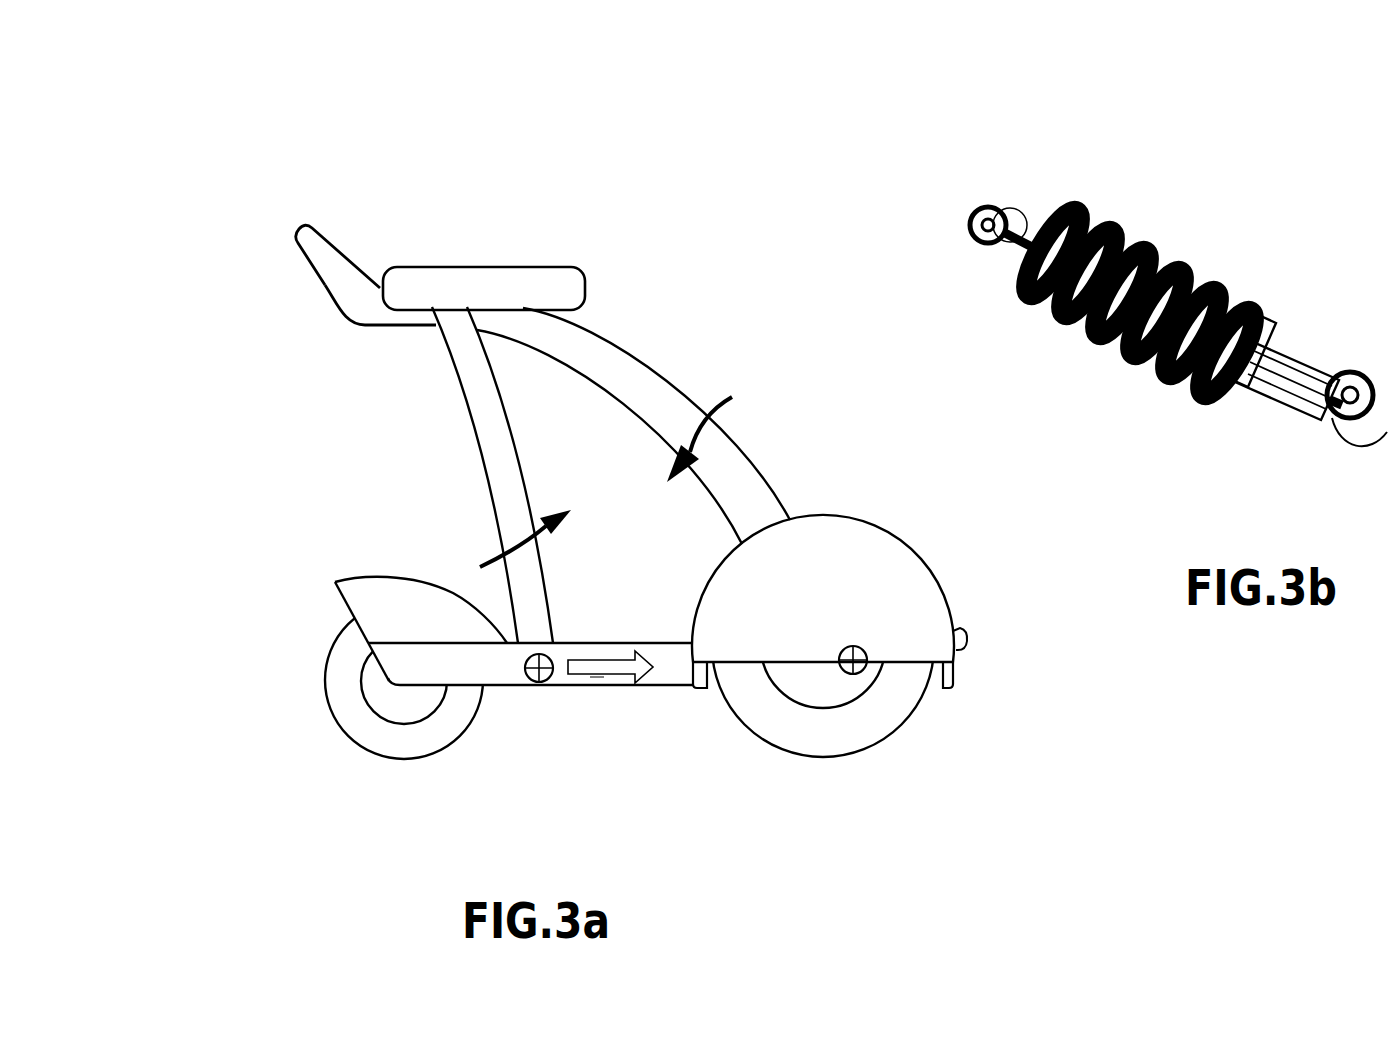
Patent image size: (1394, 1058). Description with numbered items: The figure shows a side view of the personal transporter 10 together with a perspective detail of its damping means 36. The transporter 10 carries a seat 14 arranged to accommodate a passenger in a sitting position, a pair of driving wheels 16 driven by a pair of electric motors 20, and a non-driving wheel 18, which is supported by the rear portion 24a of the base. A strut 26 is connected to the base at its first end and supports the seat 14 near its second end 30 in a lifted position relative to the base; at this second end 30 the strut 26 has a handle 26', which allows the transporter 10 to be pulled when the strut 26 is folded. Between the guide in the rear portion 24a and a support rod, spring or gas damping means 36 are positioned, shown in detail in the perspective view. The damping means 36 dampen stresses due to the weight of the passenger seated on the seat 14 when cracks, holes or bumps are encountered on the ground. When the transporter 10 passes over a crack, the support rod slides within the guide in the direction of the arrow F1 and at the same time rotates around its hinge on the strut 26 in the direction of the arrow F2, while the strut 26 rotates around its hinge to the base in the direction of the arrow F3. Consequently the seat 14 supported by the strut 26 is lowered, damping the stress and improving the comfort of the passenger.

In FIG. 3A, the personal transporter 10 is at (575, 458).
In FIG. 3A, the seat 14 is at (383, 270).
In FIG. 3A, the handle 26' is at (265, 275).
In FIG. 3A, the second end 30 is at (418, 320).
In FIG. 3A, the strut 26 is at (685, 426).
In FIG. 3A, the arrow F3 is at (708, 400).
In FIG. 3A, the arrow F2 is at (478, 562).
In FIG. 3A, the arrow F1 is at (650, 688).
In FIG. 3A, the non-driving wheel 18 is at (387, 732).
In FIG. 3A, the rear portion 24a is at (505, 675).
In FIG. 3A, the damping means 36 is at (597, 684).
In FIG. 3B, the damping means 36 is at (1227, 377).
In FIG. 3A, the electric motor 20 is at (803, 672).
In FIG. 3A, the driving wheel 16 is at (874, 727).